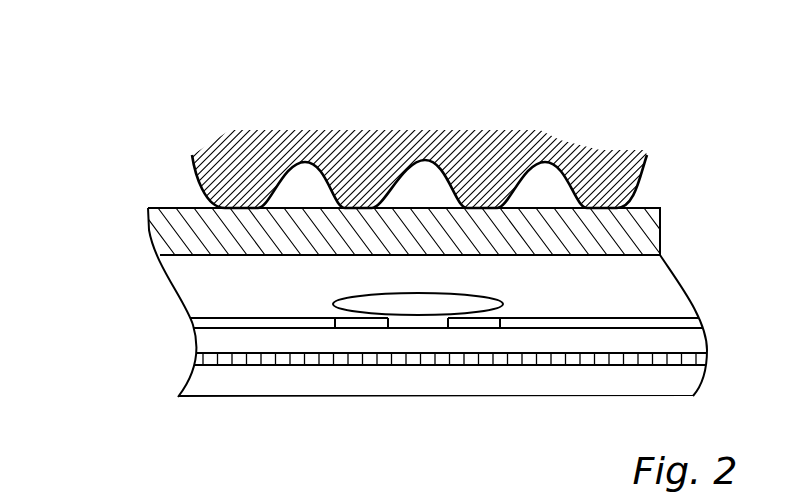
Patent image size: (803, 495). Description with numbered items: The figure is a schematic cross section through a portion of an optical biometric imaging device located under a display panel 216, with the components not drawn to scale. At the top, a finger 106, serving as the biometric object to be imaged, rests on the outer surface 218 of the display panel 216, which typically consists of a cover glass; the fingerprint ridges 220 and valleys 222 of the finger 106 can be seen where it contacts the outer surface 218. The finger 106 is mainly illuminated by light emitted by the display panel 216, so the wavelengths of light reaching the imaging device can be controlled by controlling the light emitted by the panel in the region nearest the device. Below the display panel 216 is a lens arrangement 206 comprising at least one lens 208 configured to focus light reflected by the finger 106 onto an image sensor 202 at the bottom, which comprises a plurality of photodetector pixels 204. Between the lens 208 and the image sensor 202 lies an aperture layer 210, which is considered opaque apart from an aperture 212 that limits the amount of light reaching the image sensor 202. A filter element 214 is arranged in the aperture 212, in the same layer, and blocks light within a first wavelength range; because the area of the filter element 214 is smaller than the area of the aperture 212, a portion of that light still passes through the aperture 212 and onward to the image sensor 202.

The finger 106 is at (241, 152).
The image sensor 202 is at (178, 352).
The photodetector pixels 204 is at (227, 360).
The lens arrangement 206 is at (707, 297).
The lens 208 is at (500, 305).
The aperture layer 210 is at (217, 317).
The aperture 212 is at (417, 329).
The filter element 214 is at (355, 323).
The display panel 216 is at (182, 231).
The outer surface 218 is at (637, 207).
The fingerprint ridges 220 is at (605, 176).
The valleys 222 is at (548, 188).